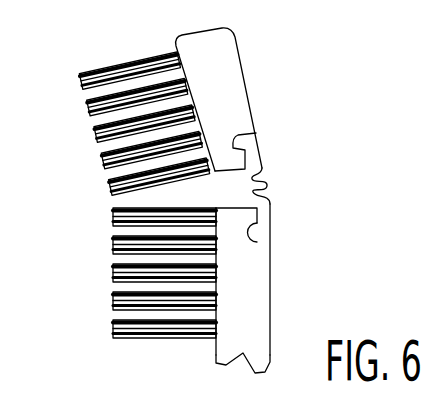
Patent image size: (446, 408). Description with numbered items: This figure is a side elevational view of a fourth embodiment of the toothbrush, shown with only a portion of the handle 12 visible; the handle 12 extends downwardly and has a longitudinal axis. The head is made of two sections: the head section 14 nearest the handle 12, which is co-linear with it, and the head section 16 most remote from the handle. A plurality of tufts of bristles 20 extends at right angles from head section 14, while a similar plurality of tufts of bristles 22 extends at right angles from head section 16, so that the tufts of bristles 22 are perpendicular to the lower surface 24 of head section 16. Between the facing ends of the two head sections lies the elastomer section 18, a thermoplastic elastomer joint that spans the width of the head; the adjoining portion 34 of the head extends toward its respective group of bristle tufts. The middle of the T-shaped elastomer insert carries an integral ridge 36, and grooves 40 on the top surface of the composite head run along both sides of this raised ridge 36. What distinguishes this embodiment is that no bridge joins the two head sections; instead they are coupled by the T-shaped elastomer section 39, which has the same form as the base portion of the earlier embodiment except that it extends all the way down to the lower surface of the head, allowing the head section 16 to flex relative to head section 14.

The handle 12 is at (226, 353).
The head section 14 is at (254, 315).
The head section 16 is at (231, 107).
The elastomer section 18 is at (317, 125).
The tufts of bristles 20 is at (112, 277).
The tufts of bristles 22 is at (97, 80).
The lower surface 24 is at (154, 56).
The head section surface 34 is at (257, 242).
The integral ridge 36 is at (265, 187).
The T shaped elastomer section 39 is at (240, 203).
The grooves 40 is at (268, 175).